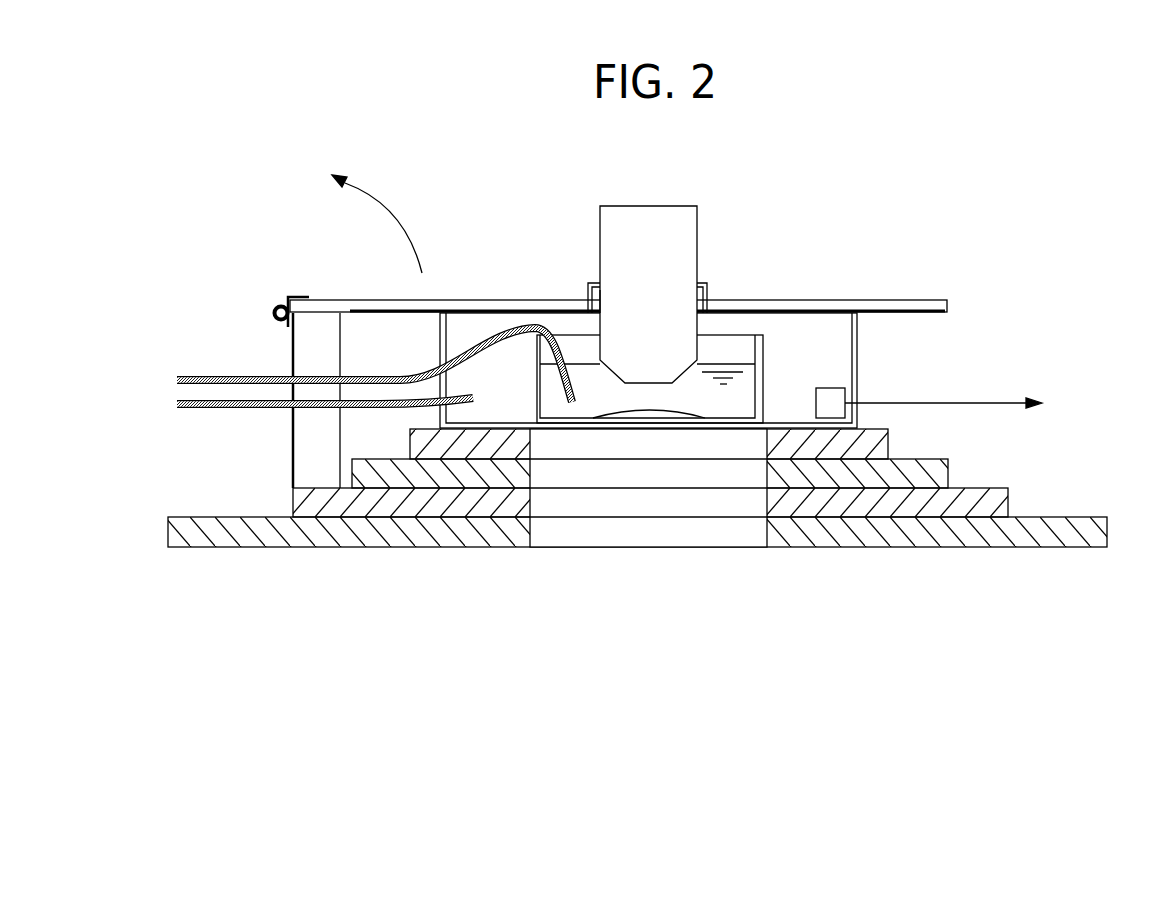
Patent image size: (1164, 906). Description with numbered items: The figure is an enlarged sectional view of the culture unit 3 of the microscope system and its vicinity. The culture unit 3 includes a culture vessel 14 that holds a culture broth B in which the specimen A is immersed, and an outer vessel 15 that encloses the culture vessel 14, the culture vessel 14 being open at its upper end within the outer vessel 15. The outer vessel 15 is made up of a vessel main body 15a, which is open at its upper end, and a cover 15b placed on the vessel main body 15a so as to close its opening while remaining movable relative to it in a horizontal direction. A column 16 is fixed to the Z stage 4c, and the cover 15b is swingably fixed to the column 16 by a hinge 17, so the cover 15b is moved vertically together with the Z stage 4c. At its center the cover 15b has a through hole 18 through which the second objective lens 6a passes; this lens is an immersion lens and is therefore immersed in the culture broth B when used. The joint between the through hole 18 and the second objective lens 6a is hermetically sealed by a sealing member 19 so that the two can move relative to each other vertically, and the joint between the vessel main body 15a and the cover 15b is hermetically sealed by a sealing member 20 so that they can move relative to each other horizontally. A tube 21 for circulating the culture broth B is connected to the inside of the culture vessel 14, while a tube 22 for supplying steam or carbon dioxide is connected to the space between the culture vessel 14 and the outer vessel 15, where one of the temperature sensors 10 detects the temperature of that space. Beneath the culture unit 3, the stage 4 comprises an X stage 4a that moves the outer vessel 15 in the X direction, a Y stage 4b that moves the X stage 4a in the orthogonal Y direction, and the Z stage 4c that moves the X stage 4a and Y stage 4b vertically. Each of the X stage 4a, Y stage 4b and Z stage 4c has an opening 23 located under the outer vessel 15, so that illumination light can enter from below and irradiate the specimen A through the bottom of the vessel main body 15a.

The culture unit 3 is at (948, 215).
The stage 4 is at (1117, 418).
The X stage 4a is at (888, 436).
The Y stage 4b is at (948, 467).
The Z stage 4c is at (1008, 495).
The second objective lens 6a is at (698, 221).
The temperature sensor 10 is at (828, 388).
The culture vessel 14 is at (765, 350).
The outer vessel 15 is at (1027, 280).
The vessel main body 15a is at (858, 340).
The cover 15b is at (947, 303).
The column 16 is at (291, 352).
The hinge 17 is at (292, 296).
The through hole 18 is at (588, 282).
The sealing member 19 is at (603, 297).
The sealing member 20 is at (480, 320).
The tube 21 is at (190, 374).
The tube 22 is at (190, 409).
The opening 23 is at (530, 525).
The specimen A is at (693, 411).
The culture broth B is at (728, 364).